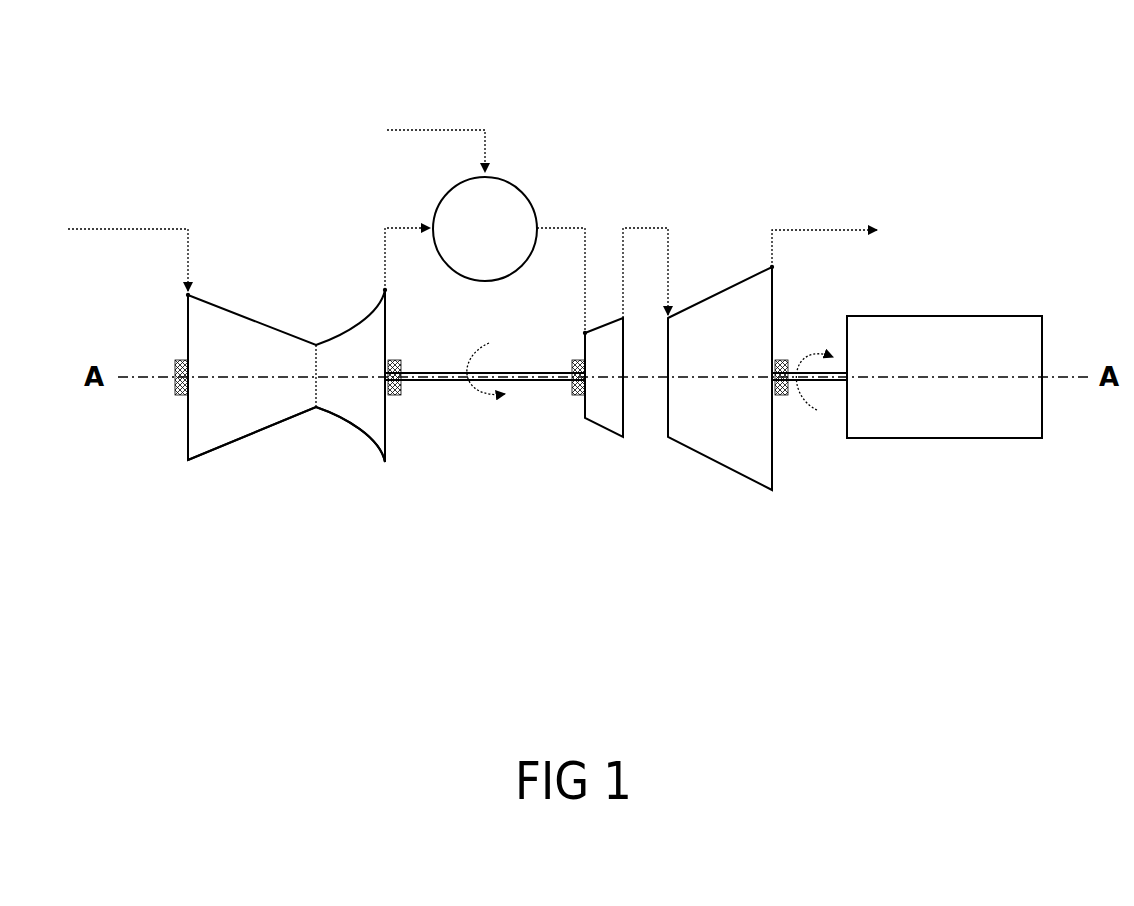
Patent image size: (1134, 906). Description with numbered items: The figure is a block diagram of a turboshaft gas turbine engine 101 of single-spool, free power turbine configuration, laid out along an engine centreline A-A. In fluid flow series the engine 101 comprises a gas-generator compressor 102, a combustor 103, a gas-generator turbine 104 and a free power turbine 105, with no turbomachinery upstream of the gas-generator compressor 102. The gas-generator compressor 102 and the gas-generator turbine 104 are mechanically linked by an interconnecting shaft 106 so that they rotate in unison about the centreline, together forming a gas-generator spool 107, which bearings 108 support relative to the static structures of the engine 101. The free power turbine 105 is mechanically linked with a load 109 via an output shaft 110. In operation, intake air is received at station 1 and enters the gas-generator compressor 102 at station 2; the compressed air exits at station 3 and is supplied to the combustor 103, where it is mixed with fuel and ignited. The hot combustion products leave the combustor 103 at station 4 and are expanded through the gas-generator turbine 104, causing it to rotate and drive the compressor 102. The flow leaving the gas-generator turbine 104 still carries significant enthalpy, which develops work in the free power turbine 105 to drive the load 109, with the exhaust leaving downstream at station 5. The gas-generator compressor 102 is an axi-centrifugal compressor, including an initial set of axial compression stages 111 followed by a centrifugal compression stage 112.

The station 1 is at (128, 247).
The station 2 is at (178, 287).
The station 3 is at (395, 313).
The station 4 is at (575, 325).
The turbine outlet station 5 is at (781, 257).
The engine 101 is at (212, 66).
The gas-generator compressor 102 is at (286, 375).
The combustor 103 is at (507, 242).
The gas-generator turbine 104 is at (580, 402).
The free power turbine 105 is at (662, 432).
The interconnecting shaft 106 is at (455, 384).
The gas-generator spool 107 is at (511, 502).
The bearings 108 is at (172, 392).
The load 109 is at (964, 364).
The output shaft 110 is at (825, 386).
The axial compression stages 111 is at (233, 448).
The centrifugal compression stage 112 is at (358, 430).